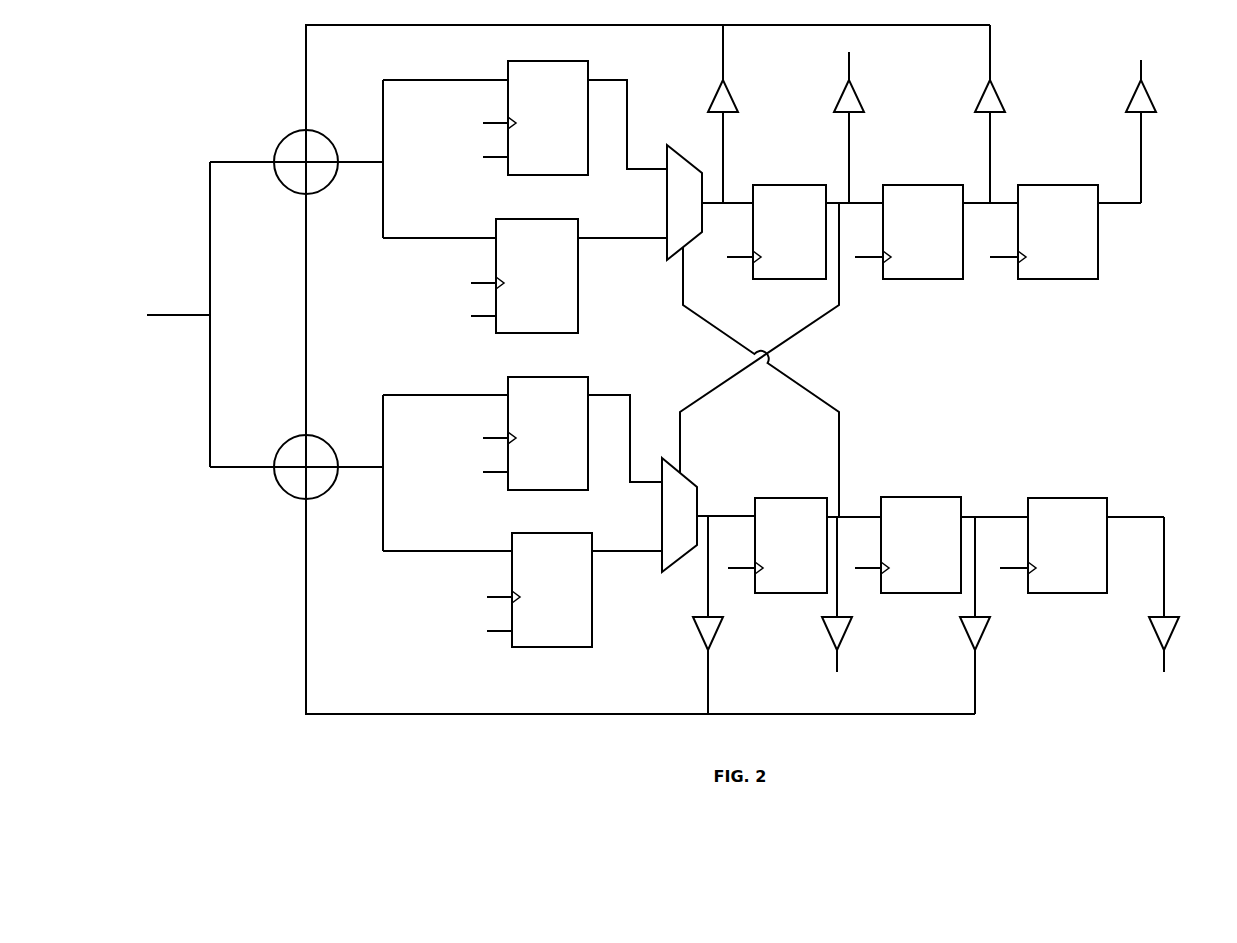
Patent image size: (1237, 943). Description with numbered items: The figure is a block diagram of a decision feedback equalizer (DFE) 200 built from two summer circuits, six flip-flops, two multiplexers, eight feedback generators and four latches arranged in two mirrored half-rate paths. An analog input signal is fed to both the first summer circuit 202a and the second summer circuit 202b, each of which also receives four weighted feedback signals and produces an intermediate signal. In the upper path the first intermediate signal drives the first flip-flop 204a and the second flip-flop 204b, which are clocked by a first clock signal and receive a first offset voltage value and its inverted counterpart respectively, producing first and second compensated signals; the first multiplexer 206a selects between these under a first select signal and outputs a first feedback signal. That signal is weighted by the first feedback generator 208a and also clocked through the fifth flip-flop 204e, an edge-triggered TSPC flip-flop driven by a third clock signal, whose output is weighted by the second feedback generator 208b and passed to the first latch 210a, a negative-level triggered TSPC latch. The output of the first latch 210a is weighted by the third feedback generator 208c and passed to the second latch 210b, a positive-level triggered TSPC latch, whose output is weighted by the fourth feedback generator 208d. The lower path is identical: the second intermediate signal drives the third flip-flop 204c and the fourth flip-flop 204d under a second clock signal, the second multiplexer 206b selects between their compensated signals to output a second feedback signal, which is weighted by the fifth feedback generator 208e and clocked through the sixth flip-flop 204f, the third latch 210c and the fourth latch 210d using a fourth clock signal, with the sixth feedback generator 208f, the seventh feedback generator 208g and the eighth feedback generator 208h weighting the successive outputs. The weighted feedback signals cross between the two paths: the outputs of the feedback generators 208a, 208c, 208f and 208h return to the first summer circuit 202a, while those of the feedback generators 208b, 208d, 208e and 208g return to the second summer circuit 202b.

The decision feedback equalizer 200 is at (272, 618).
The first summer circuit 202a is at (283, 140).
The second summer circuit 202b is at (293, 440).
The first flip-flop 204a is at (590, 150).
The second flip-flop 204b is at (578, 312).
The third flip-flop 204c is at (590, 475).
The fourth flip-flop 204d is at (594, 630).
The fifth flip-flop 204e is at (818, 185).
The sixth flip-flop 204f is at (812, 498).
The first multiplexer 206a is at (670, 147).
The second multiplexer 206b is at (664, 571).
The first feedback generator 208a is at (714, 97).
The second feedback generator 208b is at (840, 97).
The third feedback generator 208c is at (981, 97).
The fourth feedback generator 208d is at (1133, 97).
The fifth feedback generator 208e is at (700, 634).
The sixth feedback generator 208f is at (828, 632).
The seventh feedback generator 208g is at (966, 632).
The eighth feedback generator 208h is at (1156, 632).
The first latch 210a is at (954, 185).
The second latch 210b is at (1092, 185).
The third latch 210c is at (946, 497).
The fourth latch 210d is at (1088, 498).